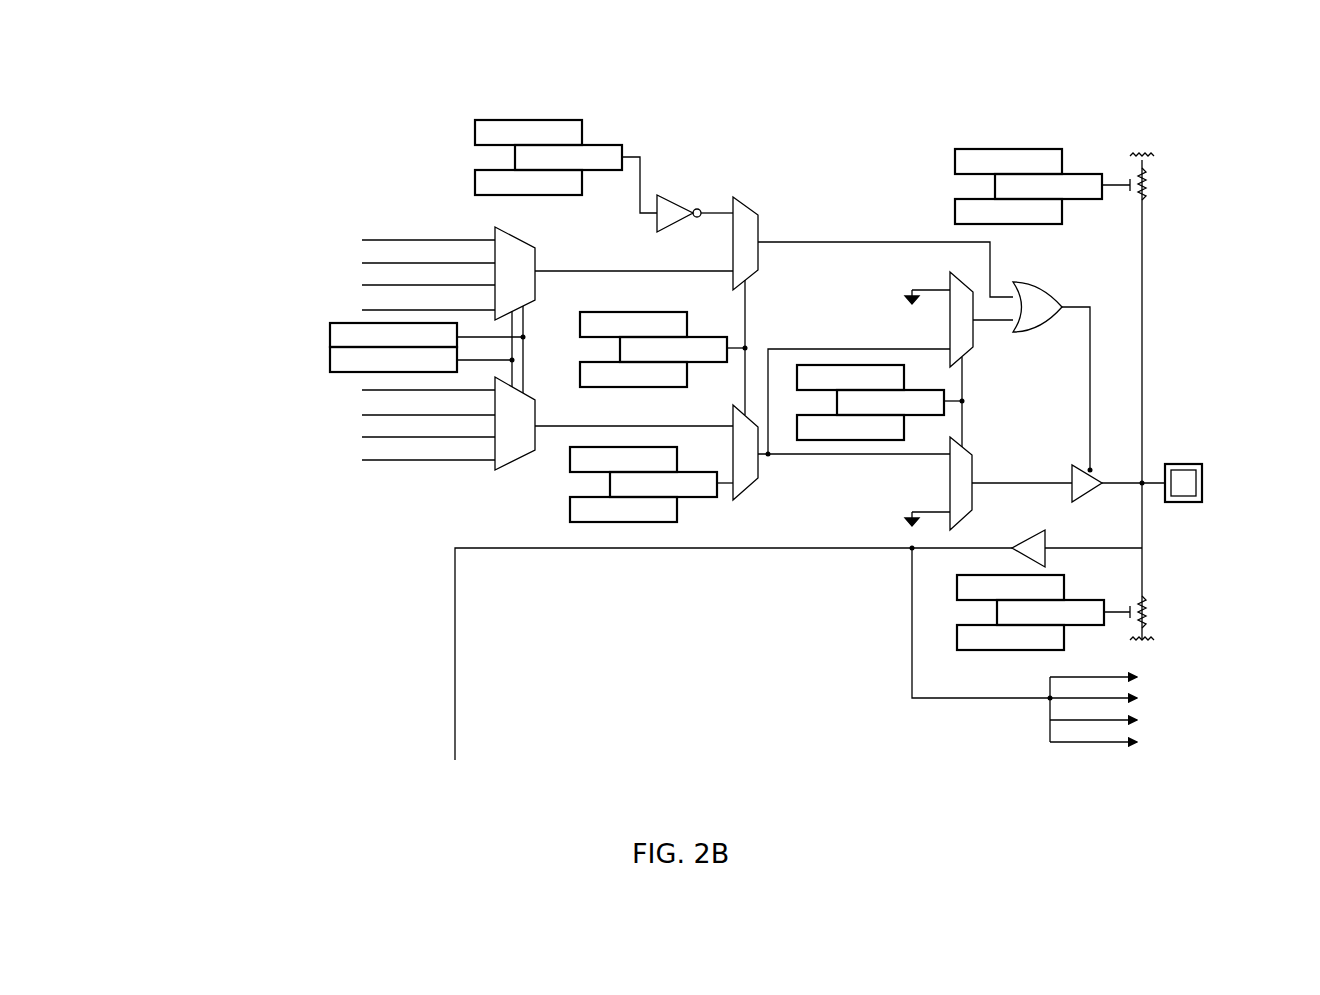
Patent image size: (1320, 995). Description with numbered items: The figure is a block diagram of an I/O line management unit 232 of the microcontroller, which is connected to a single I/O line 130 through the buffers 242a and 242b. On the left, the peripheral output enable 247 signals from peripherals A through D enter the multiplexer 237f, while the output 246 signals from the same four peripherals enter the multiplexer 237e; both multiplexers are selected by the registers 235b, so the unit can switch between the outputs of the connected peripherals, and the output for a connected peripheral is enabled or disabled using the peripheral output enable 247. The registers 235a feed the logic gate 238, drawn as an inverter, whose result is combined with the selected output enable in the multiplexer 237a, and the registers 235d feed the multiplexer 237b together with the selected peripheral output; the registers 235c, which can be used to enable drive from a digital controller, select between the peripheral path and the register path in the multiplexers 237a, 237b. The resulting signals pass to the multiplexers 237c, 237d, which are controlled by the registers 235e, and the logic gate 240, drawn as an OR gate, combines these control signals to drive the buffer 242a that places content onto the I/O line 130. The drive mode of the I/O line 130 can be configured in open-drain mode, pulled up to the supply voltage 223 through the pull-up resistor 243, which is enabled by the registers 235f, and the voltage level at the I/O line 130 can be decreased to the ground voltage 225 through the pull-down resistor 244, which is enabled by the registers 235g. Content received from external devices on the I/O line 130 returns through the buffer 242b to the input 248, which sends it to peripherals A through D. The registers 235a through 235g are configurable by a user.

The I/O line management unit 232 is at (194, 74).
The registers 235a is at (473, 115).
The registers 235b is at (331, 322).
The registers 235c is at (576, 302).
The registers 235d is at (568, 440).
The registers 235e is at (925, 360).
The registers 235f is at (948, 140).
The registers 235g is at (956, 655).
The multiplexer 237a is at (754, 220).
The multiplexer 237b is at (751, 476).
The multiplexer 237c is at (950, 316).
The multiplexer 237d is at (950, 486).
The multiplexer 237e is at (495, 470).
The multiplexer 237f is at (530, 248).
The logic gate 238 is at (672, 202).
The logic gate 240 is at (1045, 298).
The buffer 242a is at (1078, 469).
The buffer 242b is at (1041, 541).
The pull-up resistor 243 is at (1163, 192).
The pull-down resistor 244 is at (1168, 600).
The output 246 is at (236, 367).
The peripheral output enable 247 is at (185, 222).
The input 248 is at (1250, 665).
The I/O line 130 is at (1202, 477).
The supply voltage 223 is at (1158, 133).
The ground voltage 225 is at (1160, 650).